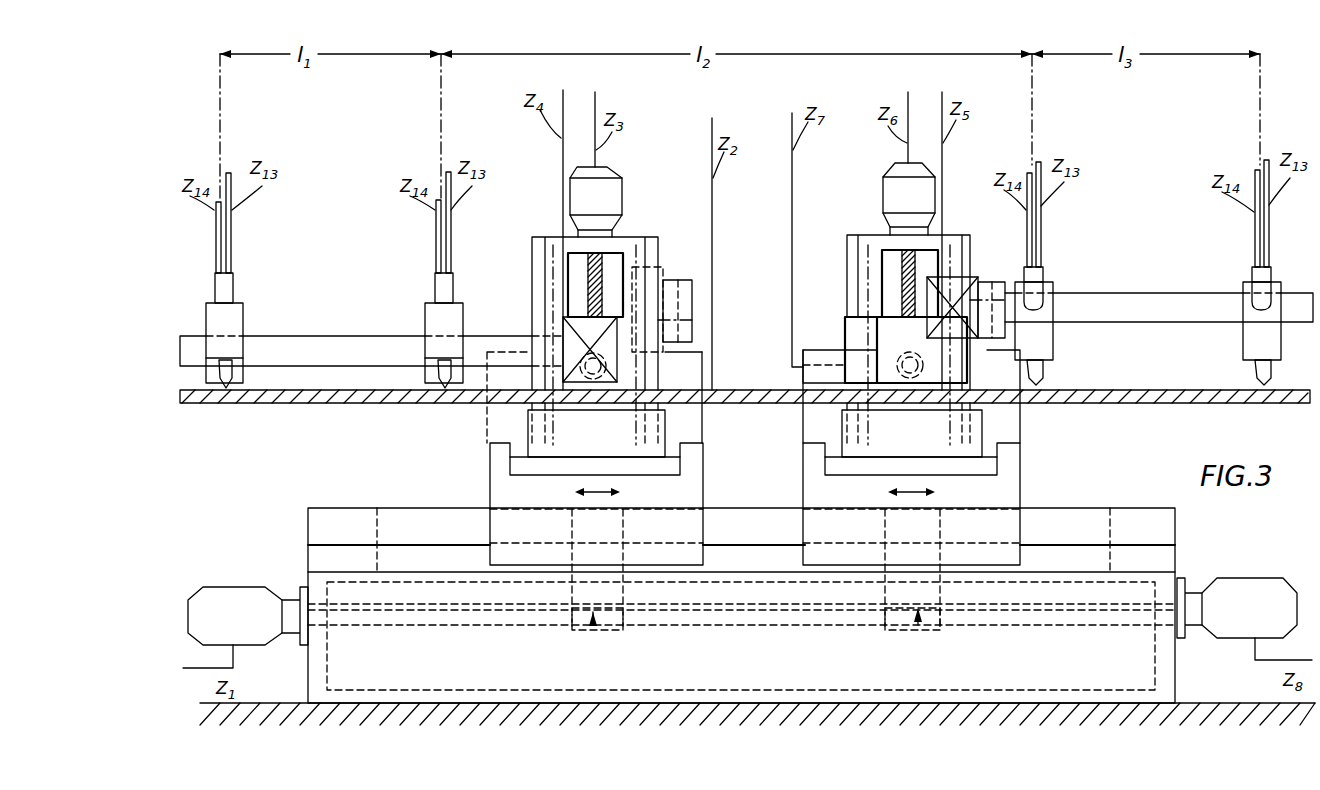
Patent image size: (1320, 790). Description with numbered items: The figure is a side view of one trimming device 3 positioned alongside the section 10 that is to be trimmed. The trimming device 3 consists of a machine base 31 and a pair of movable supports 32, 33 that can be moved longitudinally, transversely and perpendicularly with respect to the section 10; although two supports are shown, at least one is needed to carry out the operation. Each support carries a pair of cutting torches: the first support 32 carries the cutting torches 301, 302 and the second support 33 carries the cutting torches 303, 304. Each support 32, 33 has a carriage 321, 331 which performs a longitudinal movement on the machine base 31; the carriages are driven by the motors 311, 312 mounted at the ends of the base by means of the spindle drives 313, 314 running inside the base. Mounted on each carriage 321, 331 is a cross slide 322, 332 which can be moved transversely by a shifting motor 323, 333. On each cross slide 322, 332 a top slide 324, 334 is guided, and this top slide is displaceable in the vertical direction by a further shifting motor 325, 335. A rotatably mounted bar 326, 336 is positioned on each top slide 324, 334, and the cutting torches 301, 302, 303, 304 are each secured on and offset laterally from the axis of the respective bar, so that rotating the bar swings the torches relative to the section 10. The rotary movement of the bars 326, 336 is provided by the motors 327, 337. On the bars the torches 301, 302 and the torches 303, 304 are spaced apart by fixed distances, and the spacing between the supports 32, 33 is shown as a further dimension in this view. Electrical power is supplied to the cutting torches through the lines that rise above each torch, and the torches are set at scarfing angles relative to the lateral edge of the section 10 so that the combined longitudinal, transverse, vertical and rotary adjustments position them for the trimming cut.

The trimming device 3 is at (1126, 507).
The section 10 is at (358, 406).
The machine base 31 is at (312, 532).
The movable support 32 is at (492, 498).
The movable support 33 is at (1020, 500).
The cutting torch 301 is at (230, 392).
The cutting torch 302 is at (443, 392).
The cutting torch 303 is at (1045, 378).
The cutting torch 304 is at (1266, 380).
The motor 311 is at (222, 600).
The motor 312 is at (1245, 590).
The spindle drive 313 is at (600, 637).
The spindle drive 314 is at (920, 637).
The carriage 321 is at (682, 497).
The cross slide 322 is at (672, 462).
The shifting motor 323 is at (603, 352).
The top slide 324 is at (634, 375).
The shifting motor 325 is at (613, 190).
The rotatably mounted bar 326 is at (334, 340).
The motor 327 is at (580, 385).
The carriage 331 is at (830, 527).
The cross slide 332 is at (822, 463).
The shifting motor 333 is at (912, 370).
The top slide 334 is at (858, 343).
The shifting motor 335 is at (895, 197).
The rotatably mounted bar 336 is at (1178, 312).
The motor 337 is at (957, 281).